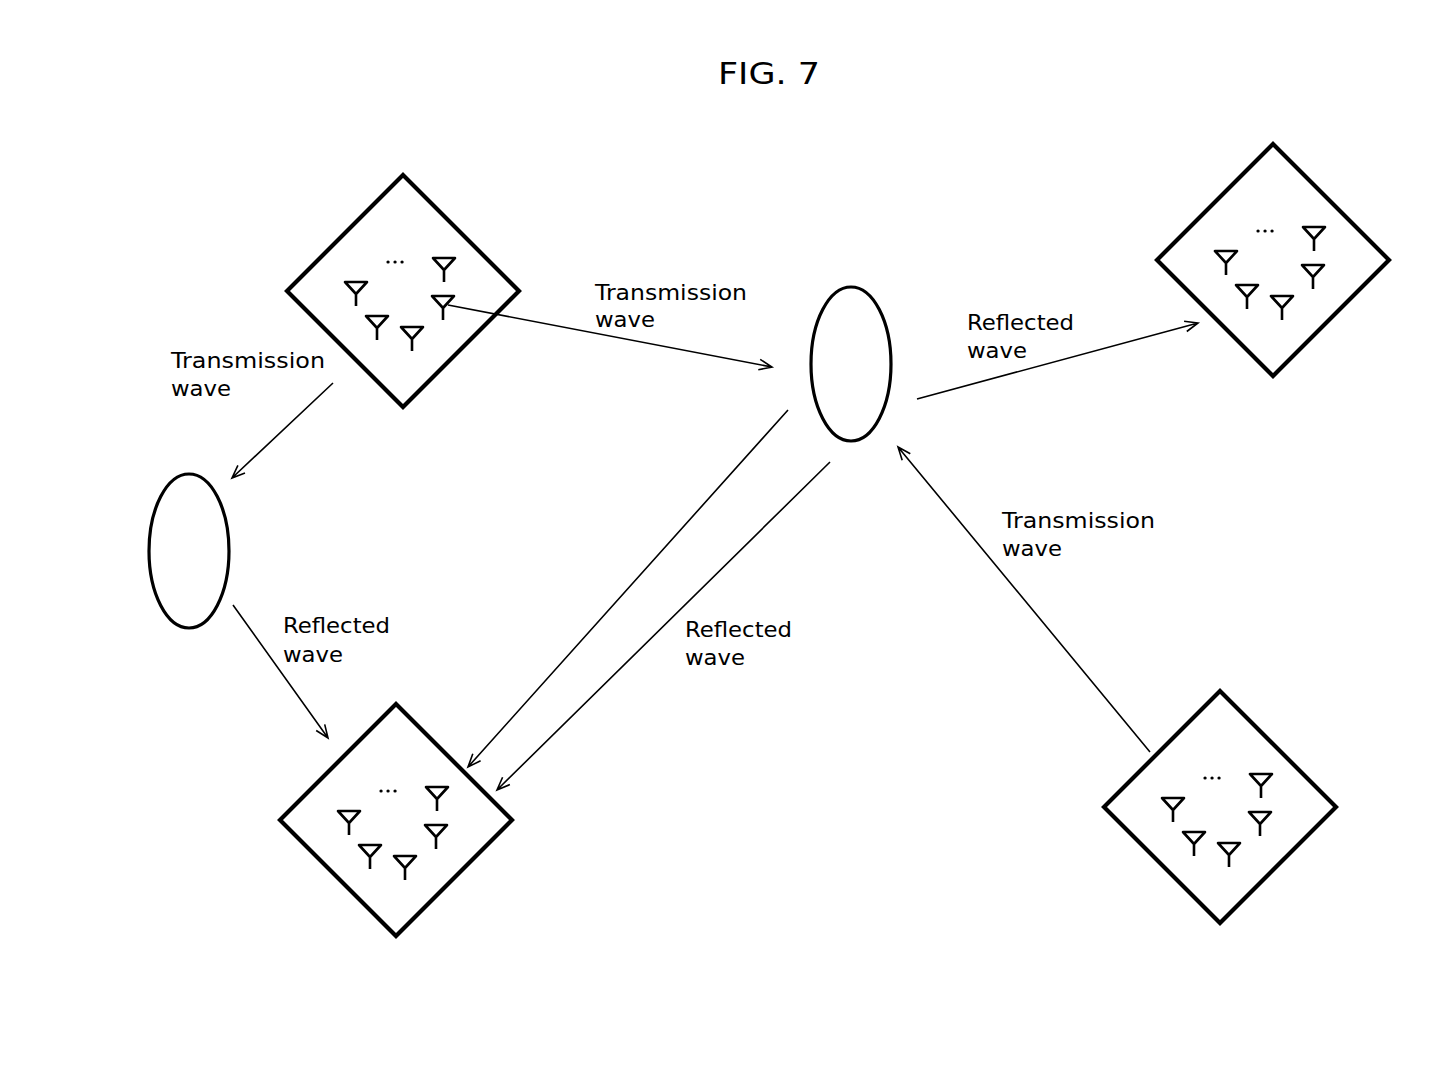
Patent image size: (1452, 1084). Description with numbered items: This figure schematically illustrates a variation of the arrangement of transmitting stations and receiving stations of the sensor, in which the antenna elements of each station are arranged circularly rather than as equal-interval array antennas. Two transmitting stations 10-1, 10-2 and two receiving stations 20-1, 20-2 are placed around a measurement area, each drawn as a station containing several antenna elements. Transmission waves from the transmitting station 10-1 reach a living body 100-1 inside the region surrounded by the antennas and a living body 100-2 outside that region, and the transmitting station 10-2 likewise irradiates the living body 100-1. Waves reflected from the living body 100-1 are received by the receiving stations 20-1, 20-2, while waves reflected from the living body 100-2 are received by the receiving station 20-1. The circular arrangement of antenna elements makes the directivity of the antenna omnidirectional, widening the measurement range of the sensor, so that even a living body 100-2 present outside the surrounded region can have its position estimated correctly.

The transmitting station 10-1 is at (420, 193).
The transmitting station 10-2 is at (1157, 860).
The receiving station 20-1 is at (462, 873).
The receiving station 20-2 is at (1208, 207).
The living body 100-1 is at (866, 288).
The living body 100-2 is at (206, 476).